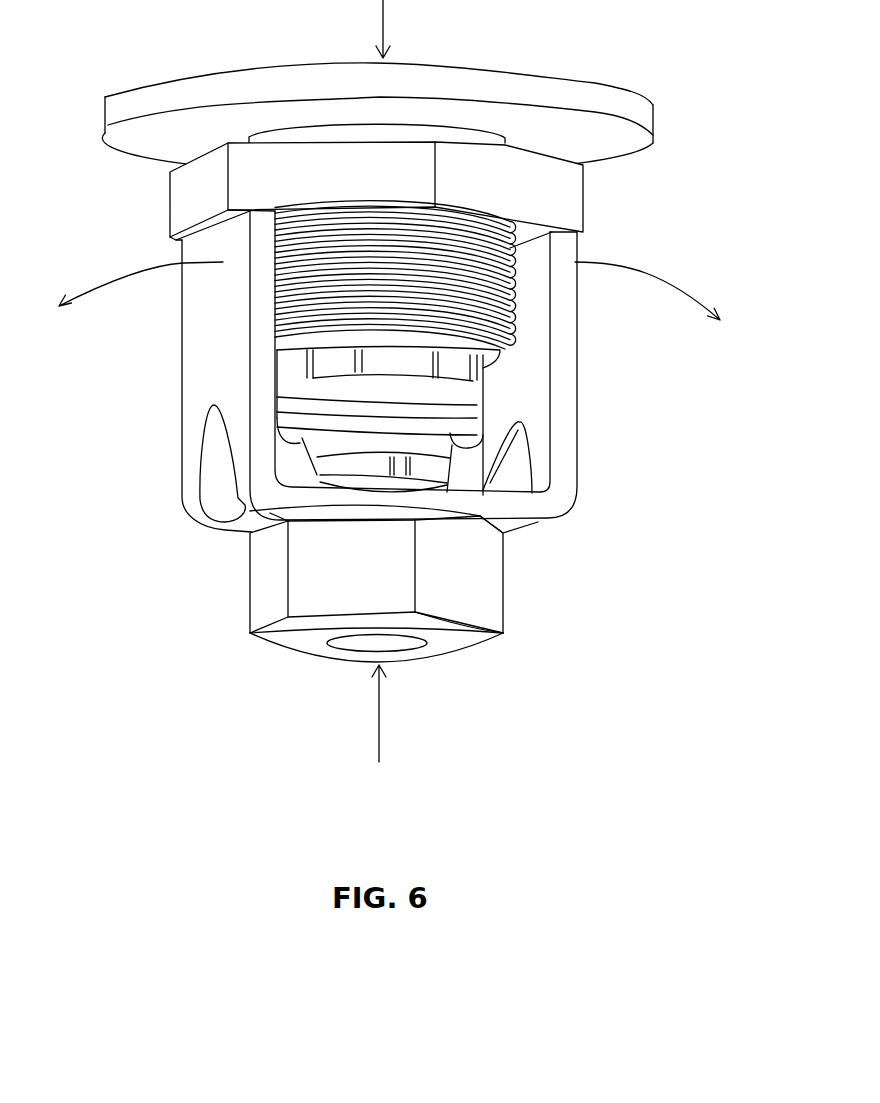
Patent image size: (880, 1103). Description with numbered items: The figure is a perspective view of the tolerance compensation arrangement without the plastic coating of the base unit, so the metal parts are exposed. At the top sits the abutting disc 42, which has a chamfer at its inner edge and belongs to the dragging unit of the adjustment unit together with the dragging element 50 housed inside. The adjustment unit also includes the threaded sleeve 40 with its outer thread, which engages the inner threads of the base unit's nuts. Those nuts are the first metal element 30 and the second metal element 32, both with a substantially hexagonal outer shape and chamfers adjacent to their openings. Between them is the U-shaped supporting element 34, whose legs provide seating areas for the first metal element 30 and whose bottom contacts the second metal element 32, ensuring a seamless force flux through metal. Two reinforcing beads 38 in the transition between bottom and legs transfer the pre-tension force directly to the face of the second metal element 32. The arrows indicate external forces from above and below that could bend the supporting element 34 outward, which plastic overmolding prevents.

The first metal element 30 is at (188, 197).
The second metal element 32 is at (445, 597).
The supporting element 34 is at (213, 318).
The reinforcing beads 38 is at (227, 497).
The threaded sleeve 40 is at (472, 273).
The abutting disc 42 is at (620, 105).
The dragging element 50 is at (413, 400).